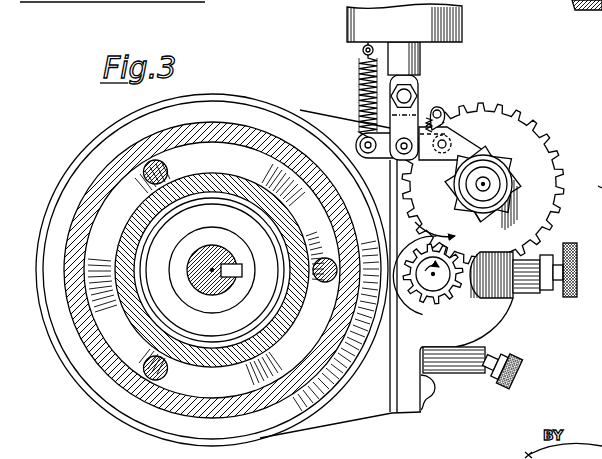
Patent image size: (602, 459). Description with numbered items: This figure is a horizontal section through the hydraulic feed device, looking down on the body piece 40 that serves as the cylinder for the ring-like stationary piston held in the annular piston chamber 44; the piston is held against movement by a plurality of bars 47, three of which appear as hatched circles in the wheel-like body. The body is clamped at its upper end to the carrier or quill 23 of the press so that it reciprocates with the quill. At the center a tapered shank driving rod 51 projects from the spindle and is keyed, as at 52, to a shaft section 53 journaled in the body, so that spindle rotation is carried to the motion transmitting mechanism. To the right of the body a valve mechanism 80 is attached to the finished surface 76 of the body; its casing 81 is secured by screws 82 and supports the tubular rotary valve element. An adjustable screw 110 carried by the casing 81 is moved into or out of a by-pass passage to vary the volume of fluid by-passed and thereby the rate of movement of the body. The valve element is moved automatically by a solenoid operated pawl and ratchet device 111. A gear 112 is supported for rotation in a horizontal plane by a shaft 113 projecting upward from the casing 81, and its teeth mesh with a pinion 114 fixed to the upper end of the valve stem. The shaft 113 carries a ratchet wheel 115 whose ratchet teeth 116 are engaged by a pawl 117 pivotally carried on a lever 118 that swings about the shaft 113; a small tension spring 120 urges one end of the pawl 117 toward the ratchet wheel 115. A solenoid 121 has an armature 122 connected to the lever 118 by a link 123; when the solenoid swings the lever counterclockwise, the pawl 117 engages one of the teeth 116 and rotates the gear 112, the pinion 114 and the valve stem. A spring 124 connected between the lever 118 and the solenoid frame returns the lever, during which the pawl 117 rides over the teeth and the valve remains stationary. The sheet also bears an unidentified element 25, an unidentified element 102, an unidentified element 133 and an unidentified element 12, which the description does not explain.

The shaft 25 is at (205, 2).
The body piece 40 is at (148, 396).
The annular piston chamber 44 is at (118, 345).
The carrier or quill 23 is at (115, 257).
The shaft section 53 is at (218, 308).
The tapered shank driving rod 51 is at (208, 250).
The key 52 is at (244, 265).
The bars 47 is at (168, 170).
The finished surface 76 is at (393, 408).
The gear 112 is at (517, 122).
The solenoid operated pawl and ratchet device 111 is at (465, 95).
The pawl 117 is at (446, 128).
The lever 118 is at (465, 172).
The ratchet wheel 115 is at (498, 163).
The ratchet teeth 116 is at (497, 215).
The shaft 113 is at (497, 192).
The pinion 114 is at (446, 309).
The adjustable screw 110 is at (570, 265).
The valve mechanism 80 is at (500, 288).
The casing 81 is at (448, 335).
The screws 82 is at (430, 398).
The screw 102 is at (522, 366).
The spring 124 is at (358, 97).
The link 123 is at (397, 133).
The tension spring 120 is at (432, 120).
The armature 122 is at (421, 60).
The solenoid 121 is at (462, 20).
The block 133 is at (580, 10).
The frame 12 is at (596, 179).